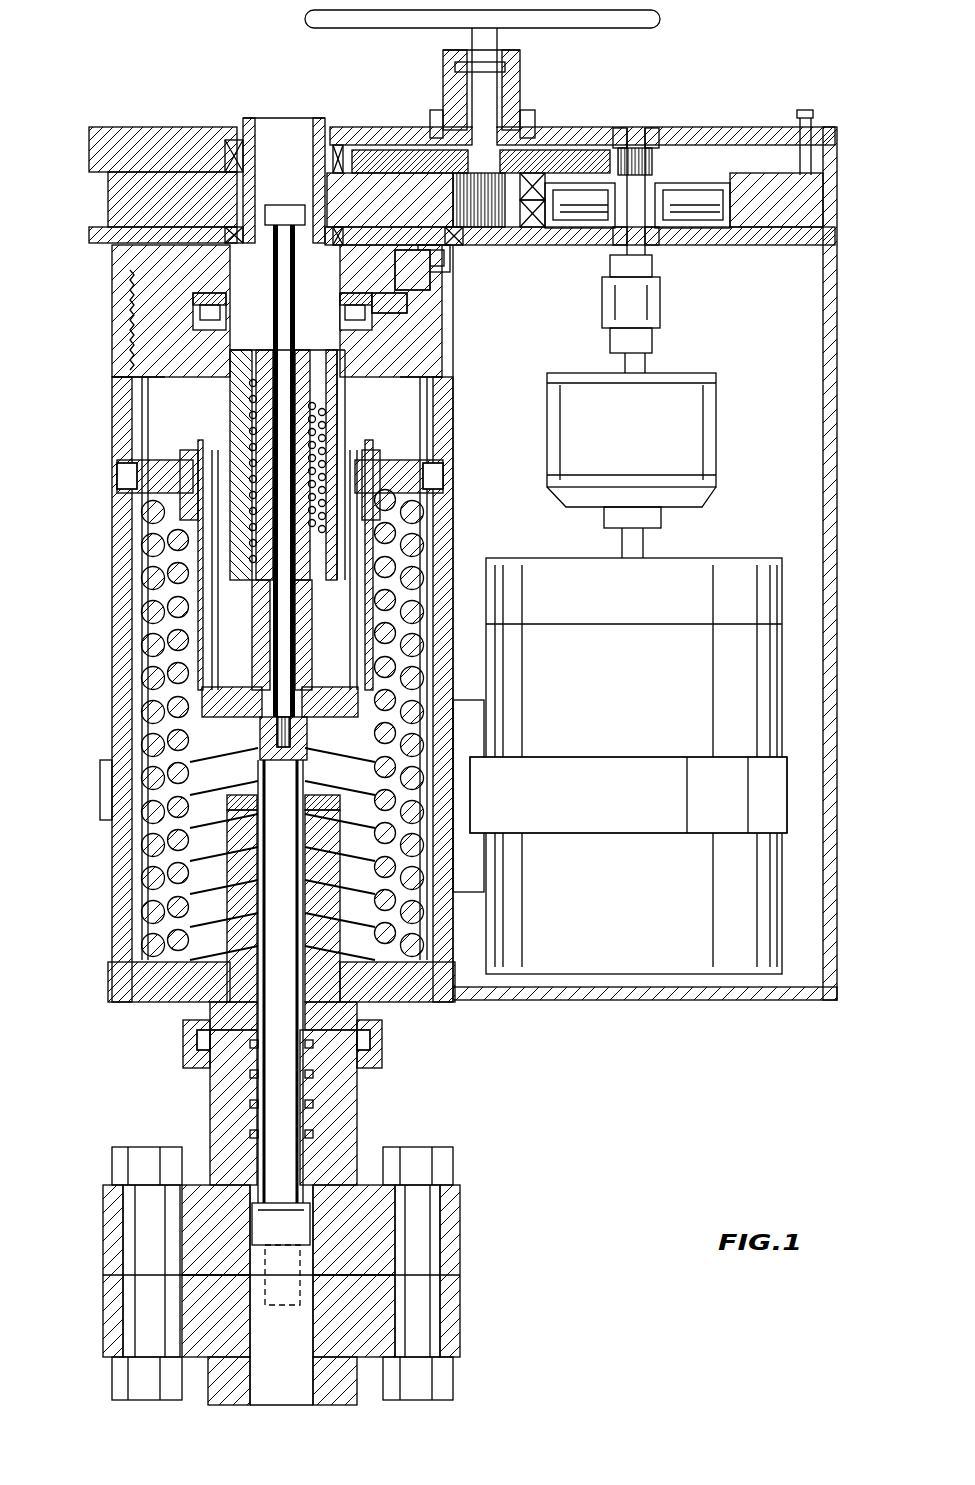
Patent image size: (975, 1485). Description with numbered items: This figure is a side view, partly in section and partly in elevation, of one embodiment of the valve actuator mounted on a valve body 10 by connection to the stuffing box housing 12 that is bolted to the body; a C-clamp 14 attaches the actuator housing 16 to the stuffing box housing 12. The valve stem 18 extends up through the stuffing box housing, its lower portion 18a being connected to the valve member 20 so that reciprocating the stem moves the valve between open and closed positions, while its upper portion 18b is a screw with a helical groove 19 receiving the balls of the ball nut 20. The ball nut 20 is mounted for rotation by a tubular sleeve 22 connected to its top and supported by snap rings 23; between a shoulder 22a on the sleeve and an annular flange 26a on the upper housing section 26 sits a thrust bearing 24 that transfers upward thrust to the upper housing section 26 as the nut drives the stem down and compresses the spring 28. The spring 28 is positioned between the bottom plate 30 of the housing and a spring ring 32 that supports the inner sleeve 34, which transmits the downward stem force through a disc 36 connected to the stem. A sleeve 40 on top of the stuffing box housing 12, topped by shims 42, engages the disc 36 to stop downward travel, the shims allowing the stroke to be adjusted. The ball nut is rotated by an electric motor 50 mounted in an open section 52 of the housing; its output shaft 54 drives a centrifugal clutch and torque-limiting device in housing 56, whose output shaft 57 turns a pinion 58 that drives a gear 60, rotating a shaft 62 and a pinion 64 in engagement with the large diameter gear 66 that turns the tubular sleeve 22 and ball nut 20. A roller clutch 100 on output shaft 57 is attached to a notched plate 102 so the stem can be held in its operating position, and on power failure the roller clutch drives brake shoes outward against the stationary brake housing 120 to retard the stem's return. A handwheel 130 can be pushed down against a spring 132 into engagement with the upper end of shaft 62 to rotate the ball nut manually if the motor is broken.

The valve body 10 is at (455, 1322).
The stuffing box housing 12 is at (345, 1148).
The C-clamp 14 is at (384, 1050).
The actuator housing 16 is at (110, 912).
The valve stem 18 is at (290, 925).
The lower portion of the valve stem 18a is at (295, 1097).
The upper portion of the valve stem 18b is at (440, 418).
The helical groove 19 is at (325, 410).
The ball nut 20 is at (232, 414).
The tubular sleeve 22 is at (135, 270).
The shoulder 22a is at (435, 325).
The snap rings 23 is at (248, 128).
The thrust bearing 24 is at (150, 300).
The upper housing section 26 is at (195, 305).
The annular flange 26a is at (410, 302).
The spring 28 is at (140, 650).
The bottom plate 30 is at (135, 1002).
The spring ring 32 is at (135, 470).
The inner sleeve 34 is at (145, 560).
The disc 36 is at (200, 700).
The sleeve 40 is at (215, 1007).
The shims 42 is at (165, 822).
The electric motor 50 is at (640, 694).
The open section 52 is at (795, 465).
The output shaft of the motor 54 is at (648, 550).
The housing 56 is at (716, 412).
The output shaft of the torque-limiting device 57 is at (652, 363).
The pinion 58 is at (652, 162).
The gear 60 is at (560, 158).
The shaft 62 is at (470, 262).
The pinion 64 is at (406, 150).
The large diameter gear 66 is at (152, 195).
The roller clutch 100 is at (655, 232).
The plate 102 is at (697, 190).
The brake housing 120 is at (523, 210).
The handwheel 130 is at (662, 20).
The spring 132 is at (510, 75).